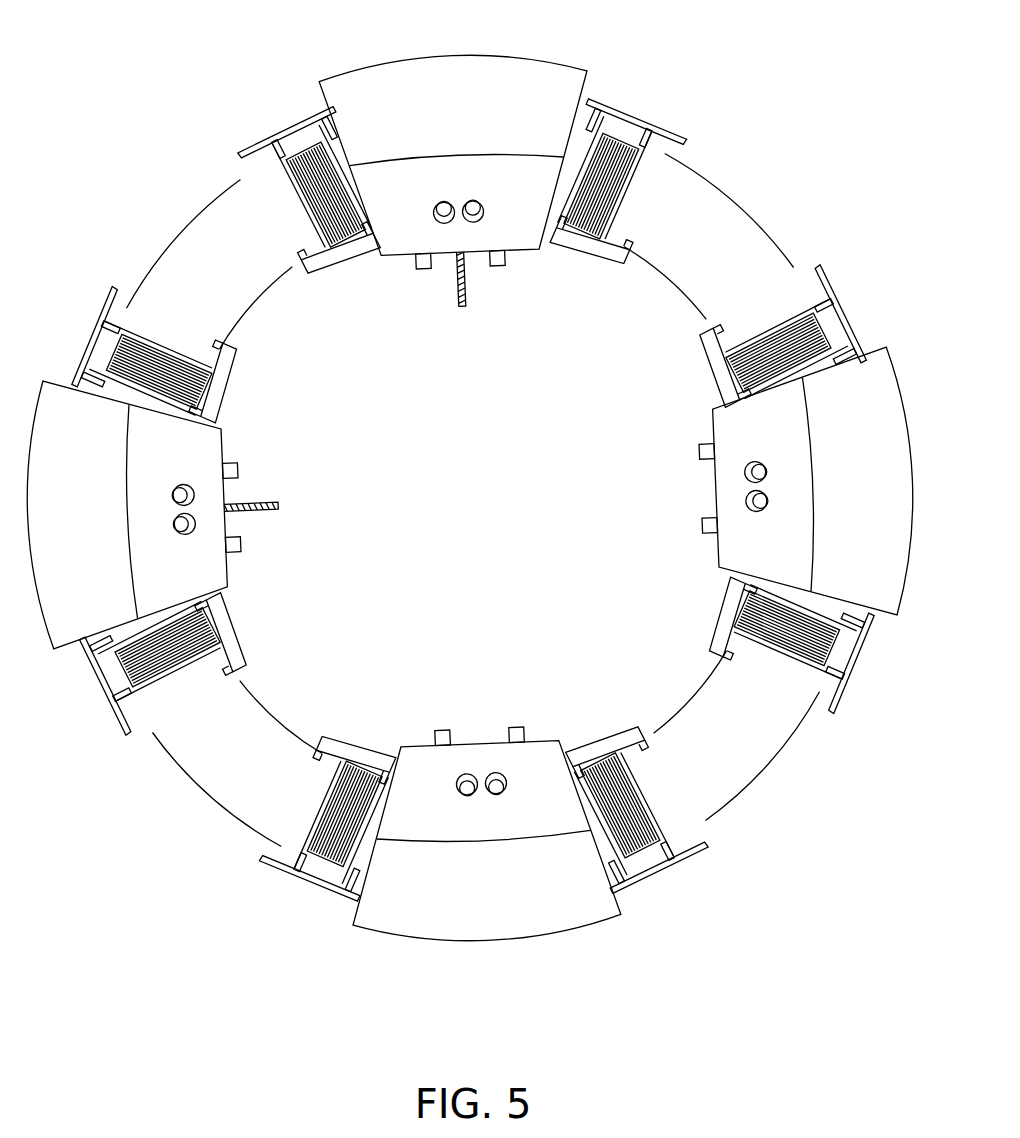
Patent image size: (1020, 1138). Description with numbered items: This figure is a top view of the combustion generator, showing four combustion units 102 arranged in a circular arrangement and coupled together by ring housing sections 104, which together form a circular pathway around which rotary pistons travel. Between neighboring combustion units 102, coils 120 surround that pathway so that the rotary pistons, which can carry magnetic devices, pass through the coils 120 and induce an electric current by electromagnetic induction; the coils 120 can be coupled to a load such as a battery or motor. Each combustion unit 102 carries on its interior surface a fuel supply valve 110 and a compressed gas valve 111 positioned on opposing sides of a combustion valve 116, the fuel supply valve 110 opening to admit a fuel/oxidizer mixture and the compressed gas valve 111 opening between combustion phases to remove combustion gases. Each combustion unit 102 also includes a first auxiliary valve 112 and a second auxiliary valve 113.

The combustion unit 102 is at (453, 70).
The ring housing section 104 is at (207, 243).
The fuel supply valve 110 is at (494, 282).
The compressed gas valve 111 is at (421, 282).
The first auxiliary valve 112 is at (447, 187).
The second auxiliary valve 113 is at (475, 187).
The combustion valve 116 is at (462, 320).
The coil 120 is at (353, 250).